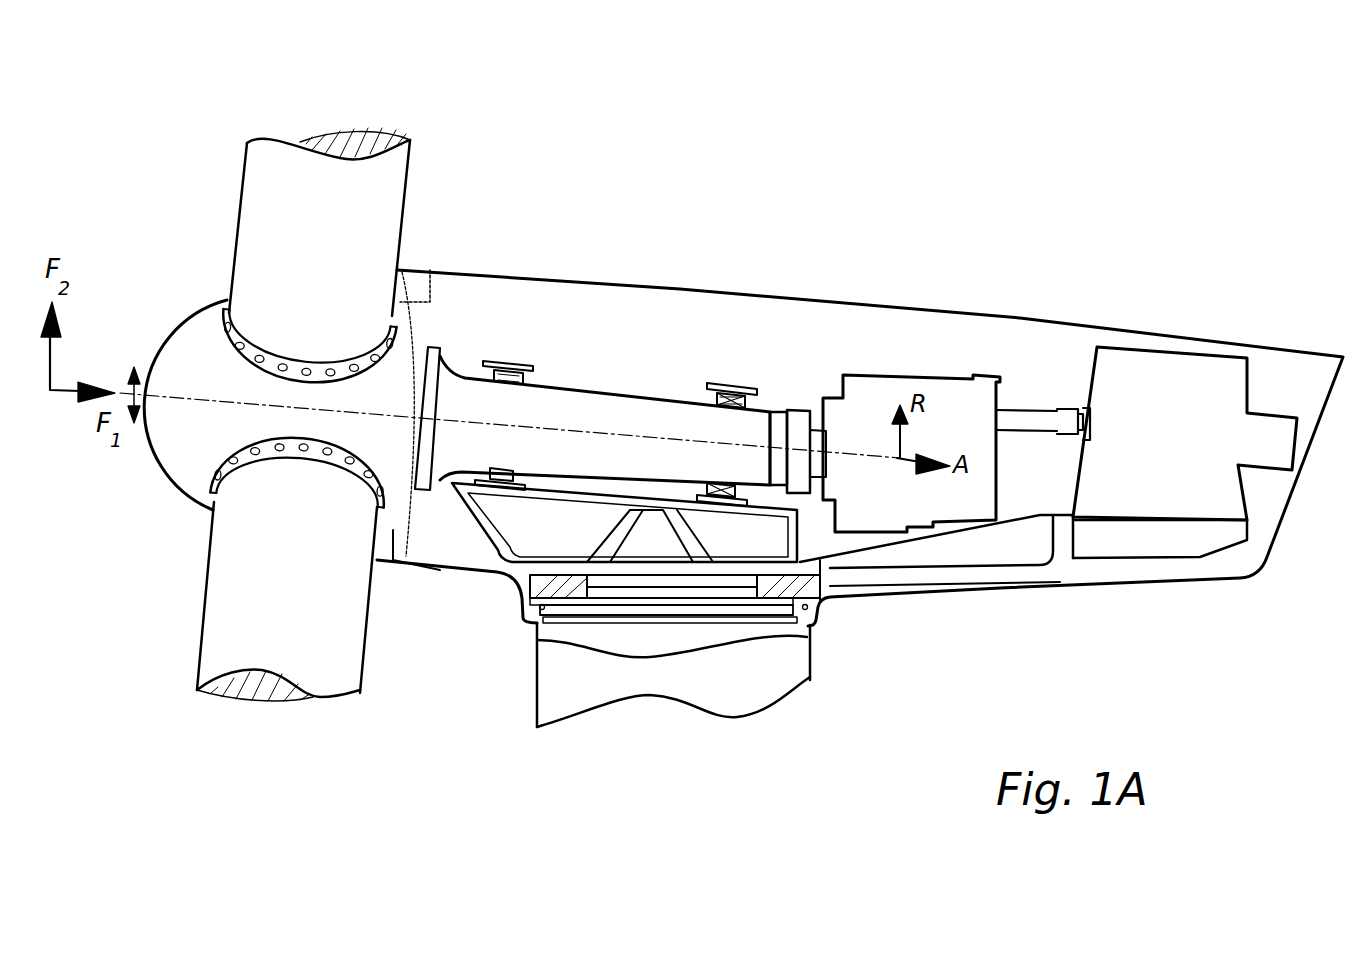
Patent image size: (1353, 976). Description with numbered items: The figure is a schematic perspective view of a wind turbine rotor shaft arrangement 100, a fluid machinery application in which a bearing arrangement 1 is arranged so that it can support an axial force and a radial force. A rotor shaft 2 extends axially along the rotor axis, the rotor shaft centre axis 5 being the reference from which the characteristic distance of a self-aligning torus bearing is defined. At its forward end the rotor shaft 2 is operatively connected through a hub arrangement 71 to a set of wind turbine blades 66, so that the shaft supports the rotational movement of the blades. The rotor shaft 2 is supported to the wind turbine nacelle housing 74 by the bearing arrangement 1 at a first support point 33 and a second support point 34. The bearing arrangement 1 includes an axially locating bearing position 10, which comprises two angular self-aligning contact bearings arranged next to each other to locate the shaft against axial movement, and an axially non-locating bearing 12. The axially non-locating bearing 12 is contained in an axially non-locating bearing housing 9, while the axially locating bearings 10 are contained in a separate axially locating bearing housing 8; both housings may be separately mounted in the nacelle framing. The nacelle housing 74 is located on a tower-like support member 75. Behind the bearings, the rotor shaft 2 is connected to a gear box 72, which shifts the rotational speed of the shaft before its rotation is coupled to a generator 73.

The wind turbine rotor shaft arrangement 100 is at (1050, 130).
The wind turbine nacelle housing 74 is at (1000, 308).
The rotor shaft centre axis 5 is at (197, 397).
The hub arrangement 71 is at (245, 422).
The wind turbine blades 66 is at (217, 622).
The rotor shaft 2 is at (587, 412).
The axially non-locating bearing 12 is at (540, 339).
The second support point 34 is at (511, 342).
The axially non-locating bearing housing 9 is at (496, 356).
The axially locating bearing position 10 is at (719, 362).
The axially locating bearing housing 8 is at (750, 392).
The first support point 33 is at (755, 365).
The bearing arrangement 1 is at (752, 316).
The gear box 72 is at (925, 490).
The generator 73 is at (1153, 493).
The tower-like support member 75 is at (782, 675).